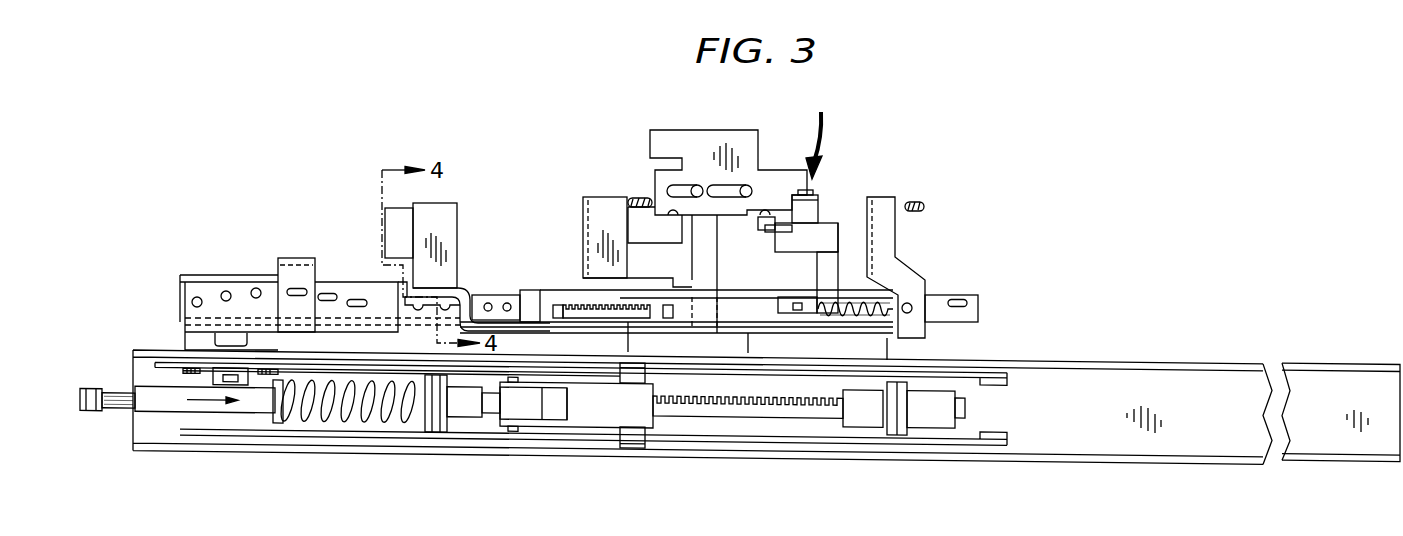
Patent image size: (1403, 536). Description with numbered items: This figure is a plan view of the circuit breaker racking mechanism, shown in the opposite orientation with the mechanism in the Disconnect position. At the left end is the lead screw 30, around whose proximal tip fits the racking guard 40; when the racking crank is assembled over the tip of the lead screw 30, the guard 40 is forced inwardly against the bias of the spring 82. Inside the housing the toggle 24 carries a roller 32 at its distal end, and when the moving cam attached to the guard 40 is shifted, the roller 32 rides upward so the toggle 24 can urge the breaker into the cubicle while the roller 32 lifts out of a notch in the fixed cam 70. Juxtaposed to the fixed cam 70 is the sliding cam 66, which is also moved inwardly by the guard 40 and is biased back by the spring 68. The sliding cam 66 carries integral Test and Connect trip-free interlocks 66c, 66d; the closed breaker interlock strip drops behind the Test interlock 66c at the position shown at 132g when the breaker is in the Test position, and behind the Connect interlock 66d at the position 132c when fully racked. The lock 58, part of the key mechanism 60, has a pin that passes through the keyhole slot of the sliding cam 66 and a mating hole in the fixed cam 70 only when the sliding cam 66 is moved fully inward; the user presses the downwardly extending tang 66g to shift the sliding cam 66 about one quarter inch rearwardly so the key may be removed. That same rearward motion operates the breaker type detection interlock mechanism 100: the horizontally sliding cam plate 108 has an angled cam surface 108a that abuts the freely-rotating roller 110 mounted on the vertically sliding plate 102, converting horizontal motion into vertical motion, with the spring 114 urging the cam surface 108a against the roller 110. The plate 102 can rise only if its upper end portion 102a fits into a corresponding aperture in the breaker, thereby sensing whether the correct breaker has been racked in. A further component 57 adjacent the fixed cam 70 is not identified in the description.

The lead screw 30 is at (117, 390).
The racking guard 40 is at (158, 413).
The spring 82 is at (323, 427).
The toggle 24 is at (597, 410).
The roller 32 is at (632, 450).
The mechanism 60 is at (398, 208).
The tang 66g is at (292, 257).
The lock 58 is at (457, 218).
The hook plate 57 is at (468, 290).
The fixed cam 70 is at (538, 320).
The sliding cam 66 is at (562, 337).
The spring 68 is at (838, 303).
The Test trip-free interlock 66c is at (600, 197).
The closed breaker interlock in Test position 132g is at (640, 198).
The horizontally sliding cam plate 108 is at (688, 130).
The angled cam surface 108a is at (792, 200).
The breaker type detection interlock mechanism 100 is at (826, 133).
The freely-rotating roller 110 is at (803, 212).
The vertically sliding plate 102 is at (832, 217).
The upper end portion 102a is at (840, 237).
The spring 114 is at (722, 205).
The Connect trip-free interlock 66d is at (893, 197).
The closed breaker interlock in Connect position 132c is at (924, 206).